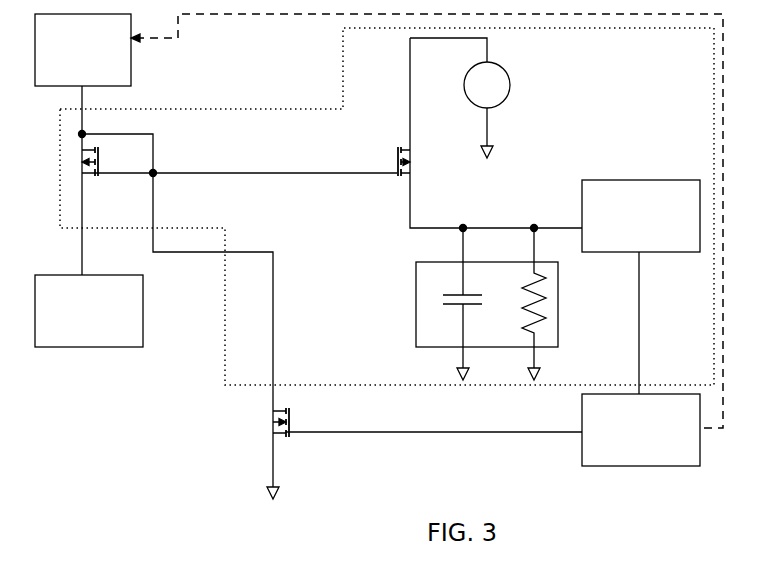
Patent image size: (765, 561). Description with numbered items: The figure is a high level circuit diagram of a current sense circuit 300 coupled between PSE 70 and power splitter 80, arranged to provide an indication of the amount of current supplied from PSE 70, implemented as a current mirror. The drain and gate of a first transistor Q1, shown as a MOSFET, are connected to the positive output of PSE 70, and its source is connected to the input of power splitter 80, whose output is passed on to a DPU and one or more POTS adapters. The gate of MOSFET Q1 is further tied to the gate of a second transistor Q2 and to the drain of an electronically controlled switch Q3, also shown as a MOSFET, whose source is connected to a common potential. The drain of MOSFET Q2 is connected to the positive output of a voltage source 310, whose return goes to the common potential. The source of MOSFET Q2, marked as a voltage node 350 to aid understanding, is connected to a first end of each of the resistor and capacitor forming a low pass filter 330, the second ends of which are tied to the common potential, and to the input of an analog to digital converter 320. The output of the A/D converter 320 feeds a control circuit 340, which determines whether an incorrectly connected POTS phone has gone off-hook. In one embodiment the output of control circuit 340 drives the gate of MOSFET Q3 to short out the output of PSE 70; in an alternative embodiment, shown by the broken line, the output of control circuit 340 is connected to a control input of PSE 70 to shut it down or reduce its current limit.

The PSE 70 is at (132, 52).
The power splitter 80 is at (143, 313).
The current sense circuit 300 is at (60, 144).
The voltage source 310 is at (510, 88).
The analog to digital converter 320 is at (626, 180).
The low pass filter 330 is at (416, 297).
The control circuit 340 is at (629, 466).
The voltage node 350 is at (463, 226).
The first transistor Q1 is at (102, 180).
The second transistor Q2 is at (400, 142).
The electronically controlled switch Q3 is at (268, 420).